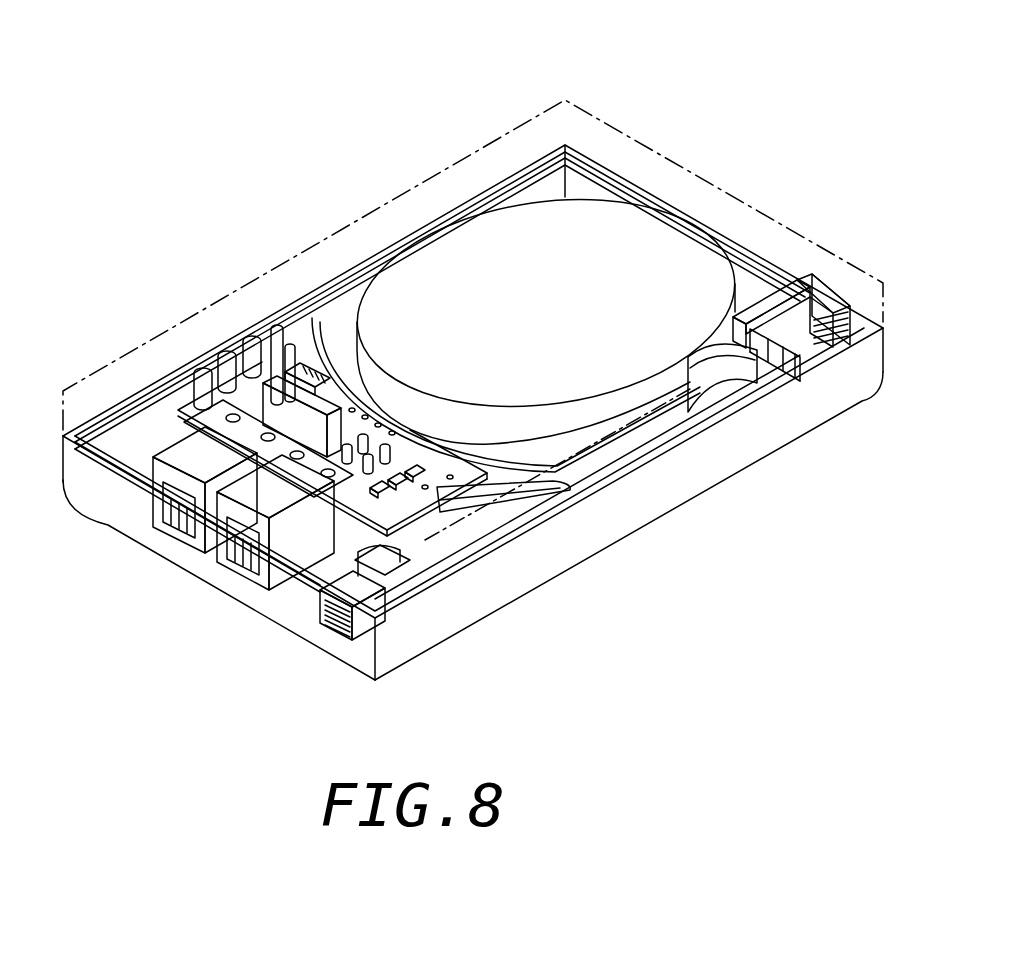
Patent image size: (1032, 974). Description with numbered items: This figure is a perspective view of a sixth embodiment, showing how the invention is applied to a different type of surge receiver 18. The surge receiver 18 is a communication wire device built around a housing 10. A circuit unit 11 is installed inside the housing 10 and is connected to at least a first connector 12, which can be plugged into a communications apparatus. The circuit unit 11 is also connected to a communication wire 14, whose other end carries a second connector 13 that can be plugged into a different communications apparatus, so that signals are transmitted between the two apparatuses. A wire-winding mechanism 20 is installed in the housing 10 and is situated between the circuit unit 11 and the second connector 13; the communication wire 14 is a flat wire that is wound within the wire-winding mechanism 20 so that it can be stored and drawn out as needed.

The housing 10 is at (890, 354).
The circuit unit 11 is at (226, 352).
The first connector 12 is at (157, 527).
The second connector 13 is at (820, 306).
The communication wire 14 is at (740, 384).
The surge receiver 18 is at (706, 148).
The wire-winding mechanism 20 is at (468, 222).